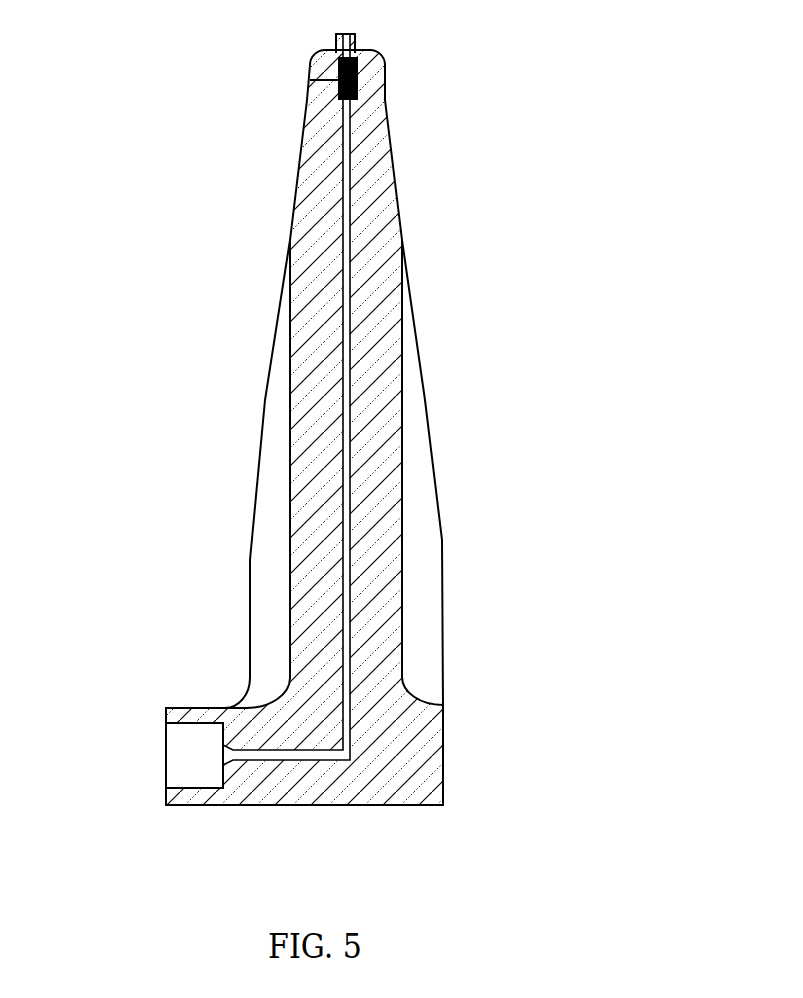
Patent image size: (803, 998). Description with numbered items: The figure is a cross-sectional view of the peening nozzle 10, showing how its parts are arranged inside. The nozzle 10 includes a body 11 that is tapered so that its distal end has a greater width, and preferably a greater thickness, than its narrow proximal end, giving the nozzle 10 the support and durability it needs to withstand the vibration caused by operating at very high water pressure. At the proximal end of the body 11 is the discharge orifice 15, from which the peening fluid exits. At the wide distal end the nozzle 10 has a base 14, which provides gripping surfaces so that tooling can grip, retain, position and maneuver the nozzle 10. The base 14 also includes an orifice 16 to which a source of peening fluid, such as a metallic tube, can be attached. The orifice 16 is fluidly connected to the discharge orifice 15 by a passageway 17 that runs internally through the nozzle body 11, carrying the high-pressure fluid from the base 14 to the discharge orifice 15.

The nozzle 10 is at (522, 210).
The body 11 is at (263, 450).
The base 14 is at (425, 765).
The discharge orifice 15 is at (357, 47).
The orifice 16 is at (168, 773).
The passageway 17 is at (348, 590).